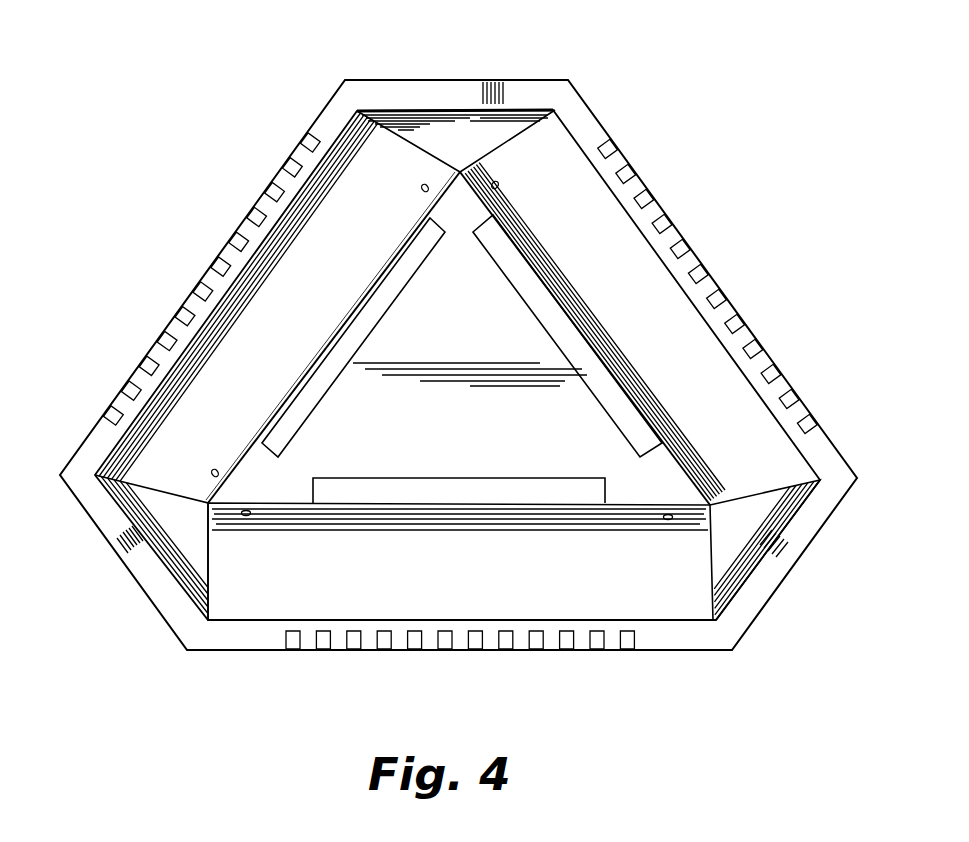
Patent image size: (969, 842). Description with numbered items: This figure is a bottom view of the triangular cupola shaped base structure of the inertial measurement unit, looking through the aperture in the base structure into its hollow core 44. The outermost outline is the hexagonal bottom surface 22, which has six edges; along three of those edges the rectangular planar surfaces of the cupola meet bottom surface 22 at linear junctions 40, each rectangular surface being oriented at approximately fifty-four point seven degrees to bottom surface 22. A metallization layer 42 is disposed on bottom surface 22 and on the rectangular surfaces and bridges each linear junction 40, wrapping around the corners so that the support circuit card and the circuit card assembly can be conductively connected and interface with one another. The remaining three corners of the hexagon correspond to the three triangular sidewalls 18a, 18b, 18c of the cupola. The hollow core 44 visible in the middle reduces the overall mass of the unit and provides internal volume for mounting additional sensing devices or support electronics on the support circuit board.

The triangular sidewall 18a is at (162, 542).
The triangular sidewall 18b is at (748, 550).
The triangular sidewall 18c is at (470, 130).
The hexagonal bottom surface 22 is at (587, 130).
The linear junction 40 is at (86, 443).
The metallization layer 42 is at (222, 260).
The hollow core 44 is at (417, 321).